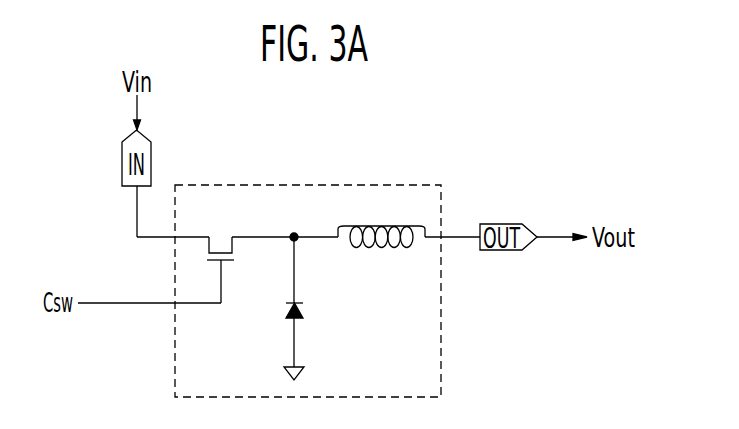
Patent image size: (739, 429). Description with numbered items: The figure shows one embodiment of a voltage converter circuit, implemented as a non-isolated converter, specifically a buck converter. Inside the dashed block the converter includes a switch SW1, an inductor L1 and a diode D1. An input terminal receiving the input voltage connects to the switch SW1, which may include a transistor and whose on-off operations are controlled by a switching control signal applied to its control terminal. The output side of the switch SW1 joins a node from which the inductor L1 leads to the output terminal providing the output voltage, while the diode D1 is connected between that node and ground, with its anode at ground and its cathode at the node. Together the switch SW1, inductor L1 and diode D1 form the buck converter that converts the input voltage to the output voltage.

The switch SW1 is at (219, 255).
The diode D1 is at (307, 308).
The inductor L1 is at (381, 220).